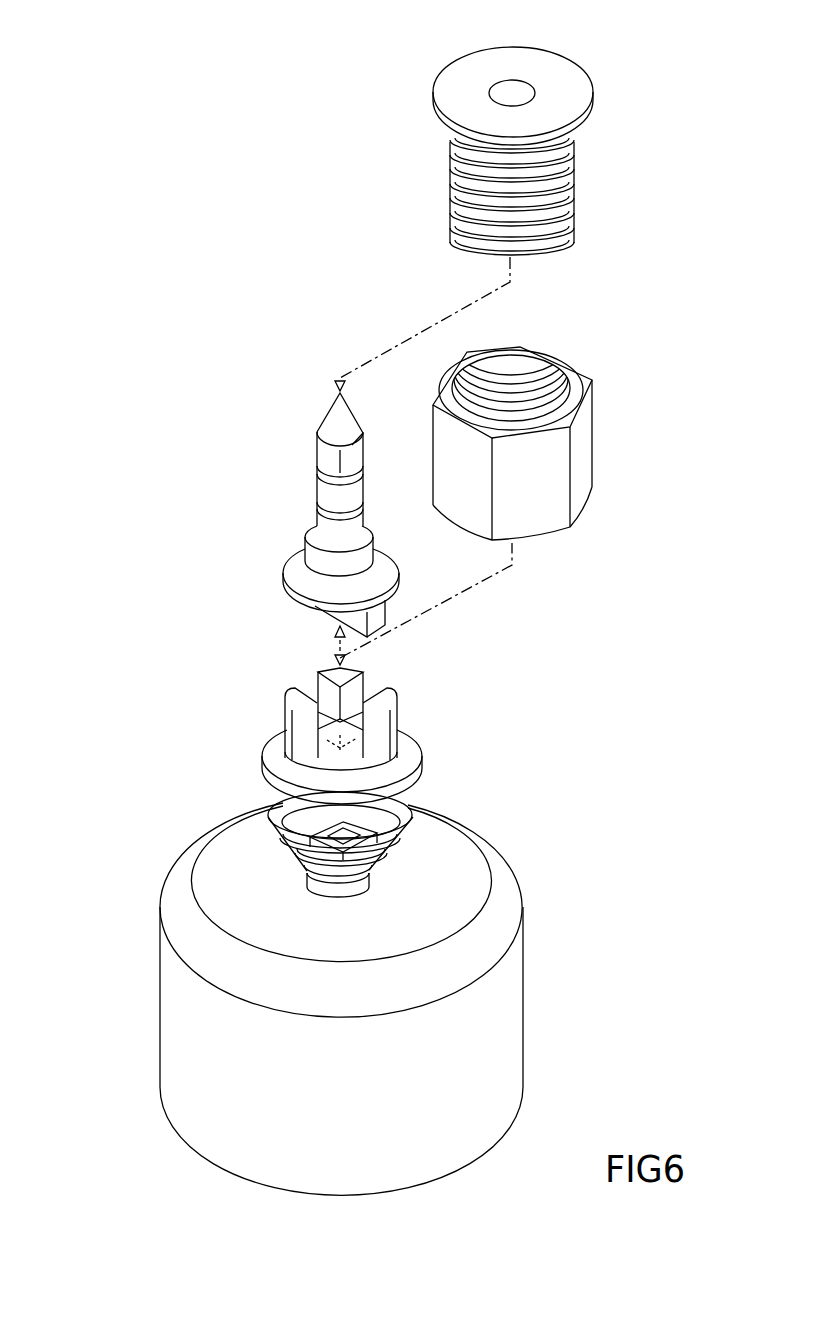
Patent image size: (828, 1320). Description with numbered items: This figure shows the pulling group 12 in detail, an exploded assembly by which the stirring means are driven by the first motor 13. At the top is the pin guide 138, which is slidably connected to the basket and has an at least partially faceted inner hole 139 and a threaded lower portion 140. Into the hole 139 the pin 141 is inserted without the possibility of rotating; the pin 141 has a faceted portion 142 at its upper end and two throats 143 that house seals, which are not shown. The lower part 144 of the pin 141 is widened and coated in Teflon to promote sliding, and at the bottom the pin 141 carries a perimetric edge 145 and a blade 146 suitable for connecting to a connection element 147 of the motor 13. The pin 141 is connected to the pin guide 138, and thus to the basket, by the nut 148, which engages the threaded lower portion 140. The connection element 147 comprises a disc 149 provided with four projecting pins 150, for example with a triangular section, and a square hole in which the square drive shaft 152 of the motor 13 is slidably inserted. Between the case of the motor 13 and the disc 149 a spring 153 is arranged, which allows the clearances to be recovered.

The pulling group 12 is at (212, 370).
The first motor 13 is at (488, 952).
The pin guide 138 is at (598, 73).
The inner hole 139 is at (523, 98).
The threaded lower portion 140 is at (547, 220).
The pin 141 is at (368, 485).
The faceted portion 142 is at (352, 445).
The throats 143 is at (347, 512).
The lower part of the pin 144 is at (317, 560).
The perimetric edge 145 is at (285, 577).
The blade 146 is at (336, 618).
The connection element 147 is at (255, 711).
The nut 148 is at (583, 493).
The disc 149 is at (277, 748).
The projecting pins 150 is at (355, 750).
The drive shaft 152 is at (305, 852).
The spring 153 is at (410, 812).